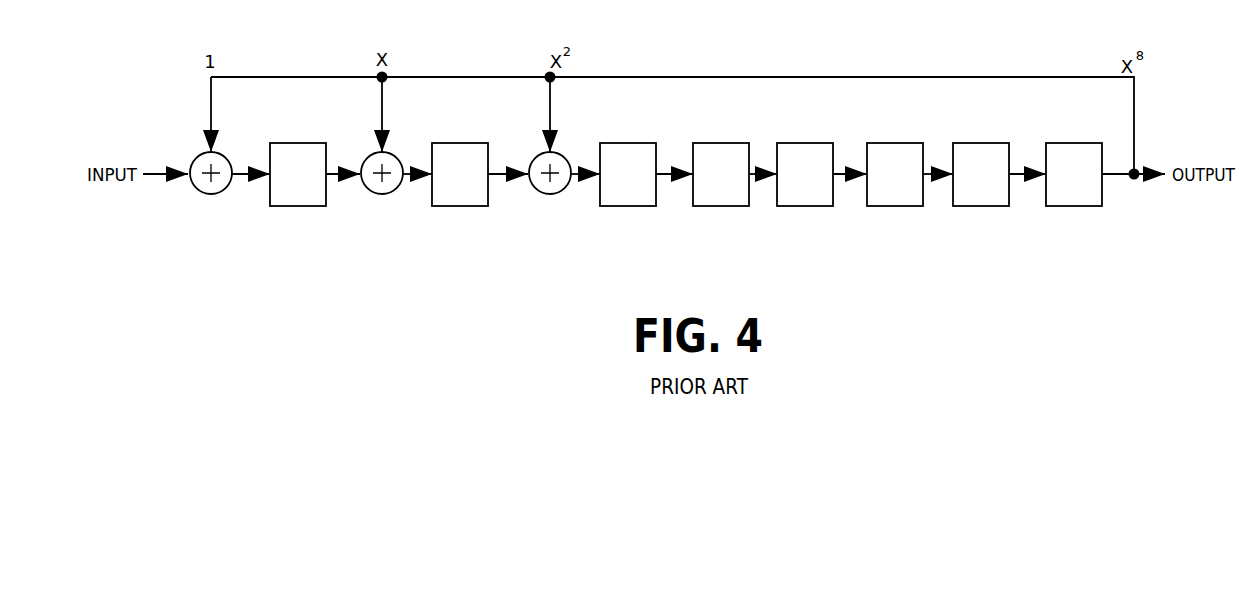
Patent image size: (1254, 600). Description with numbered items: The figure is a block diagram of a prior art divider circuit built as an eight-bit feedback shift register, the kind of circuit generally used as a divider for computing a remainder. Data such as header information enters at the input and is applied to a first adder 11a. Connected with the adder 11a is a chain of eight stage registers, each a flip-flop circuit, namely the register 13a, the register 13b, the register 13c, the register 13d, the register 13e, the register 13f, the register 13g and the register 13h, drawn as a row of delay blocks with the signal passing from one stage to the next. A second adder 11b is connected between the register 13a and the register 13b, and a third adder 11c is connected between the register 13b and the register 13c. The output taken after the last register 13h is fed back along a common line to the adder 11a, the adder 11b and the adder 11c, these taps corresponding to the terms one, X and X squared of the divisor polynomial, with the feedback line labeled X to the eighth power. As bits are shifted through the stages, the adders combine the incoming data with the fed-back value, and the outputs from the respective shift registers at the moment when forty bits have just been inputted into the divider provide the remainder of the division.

The adder 11a is at (209, 194).
The adder 11b is at (380, 194).
The adder 11c is at (548, 194).
The register 13a is at (297, 206).
The register 13b is at (459, 206).
The register 13c is at (627, 206).
The register 13d is at (720, 206).
The register 13e is at (804, 206).
The register 13f is at (894, 206).
The register 13g is at (980, 206).
The register 13h is at (1073, 206).